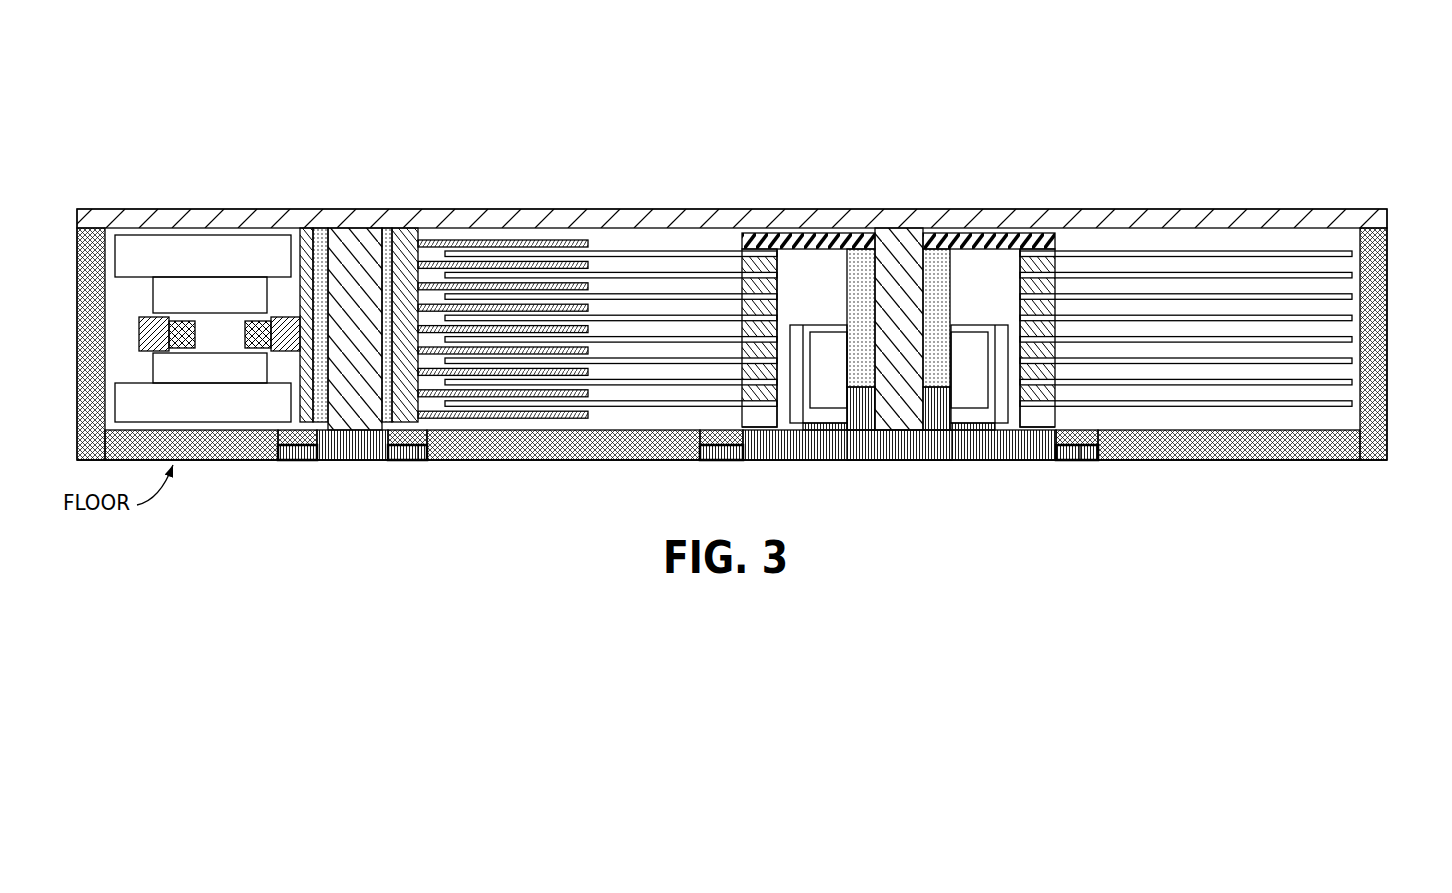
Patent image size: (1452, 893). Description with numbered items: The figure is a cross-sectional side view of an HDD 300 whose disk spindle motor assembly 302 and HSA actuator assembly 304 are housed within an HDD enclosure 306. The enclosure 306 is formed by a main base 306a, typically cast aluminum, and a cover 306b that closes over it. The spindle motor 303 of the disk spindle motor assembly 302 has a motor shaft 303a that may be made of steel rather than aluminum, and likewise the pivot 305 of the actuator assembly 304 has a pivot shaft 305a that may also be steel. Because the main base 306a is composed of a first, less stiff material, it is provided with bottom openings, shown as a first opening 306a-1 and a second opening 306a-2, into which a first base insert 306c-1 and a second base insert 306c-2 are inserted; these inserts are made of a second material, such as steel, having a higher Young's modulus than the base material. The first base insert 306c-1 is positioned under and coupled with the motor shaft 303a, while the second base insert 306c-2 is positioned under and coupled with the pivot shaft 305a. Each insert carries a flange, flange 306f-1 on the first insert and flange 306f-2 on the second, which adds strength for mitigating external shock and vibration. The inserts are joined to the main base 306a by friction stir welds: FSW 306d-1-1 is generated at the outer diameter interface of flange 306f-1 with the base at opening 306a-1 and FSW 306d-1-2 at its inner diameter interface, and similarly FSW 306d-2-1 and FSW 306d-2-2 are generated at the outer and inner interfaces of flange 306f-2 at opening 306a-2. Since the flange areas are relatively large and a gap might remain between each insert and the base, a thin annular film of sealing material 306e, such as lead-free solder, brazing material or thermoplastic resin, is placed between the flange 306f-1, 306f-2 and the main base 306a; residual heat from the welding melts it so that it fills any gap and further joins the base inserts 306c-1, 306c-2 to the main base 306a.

The HDD 300 is at (238, 80).
The disk spindle motor assembly 302 is at (932, 228).
The spindle motor 303 is at (978, 277).
The motor shaft 303a is at (893, 455).
The HSA actuator assembly 304 is at (357, 227).
The pivot 305 is at (320, 265).
The pivot shaft 305a is at (358, 462).
The HDD enclosure 306 is at (1225, 466).
The main base 306a is at (1377, 393).
The first opening 306a-1 is at (1043, 467).
The second opening 306a-2 is at (335, 465).
The cover 306b is at (1312, 218).
The first base insert 306c-1 is at (848, 447).
The second base insert 306c-2 is at (305, 460).
The friction stir weld 306d-1-1 is at (1097, 462).
The friction stir weld 306d-1-2 is at (1050, 462).
The friction stir weld 306d-2-1 is at (425, 462).
The friction stir weld 306d-2-2 is at (393, 462).
The sealing material 306e is at (480, 458).
The flange 306f-1 is at (722, 463).
The flange 306f-2 is at (410, 462).